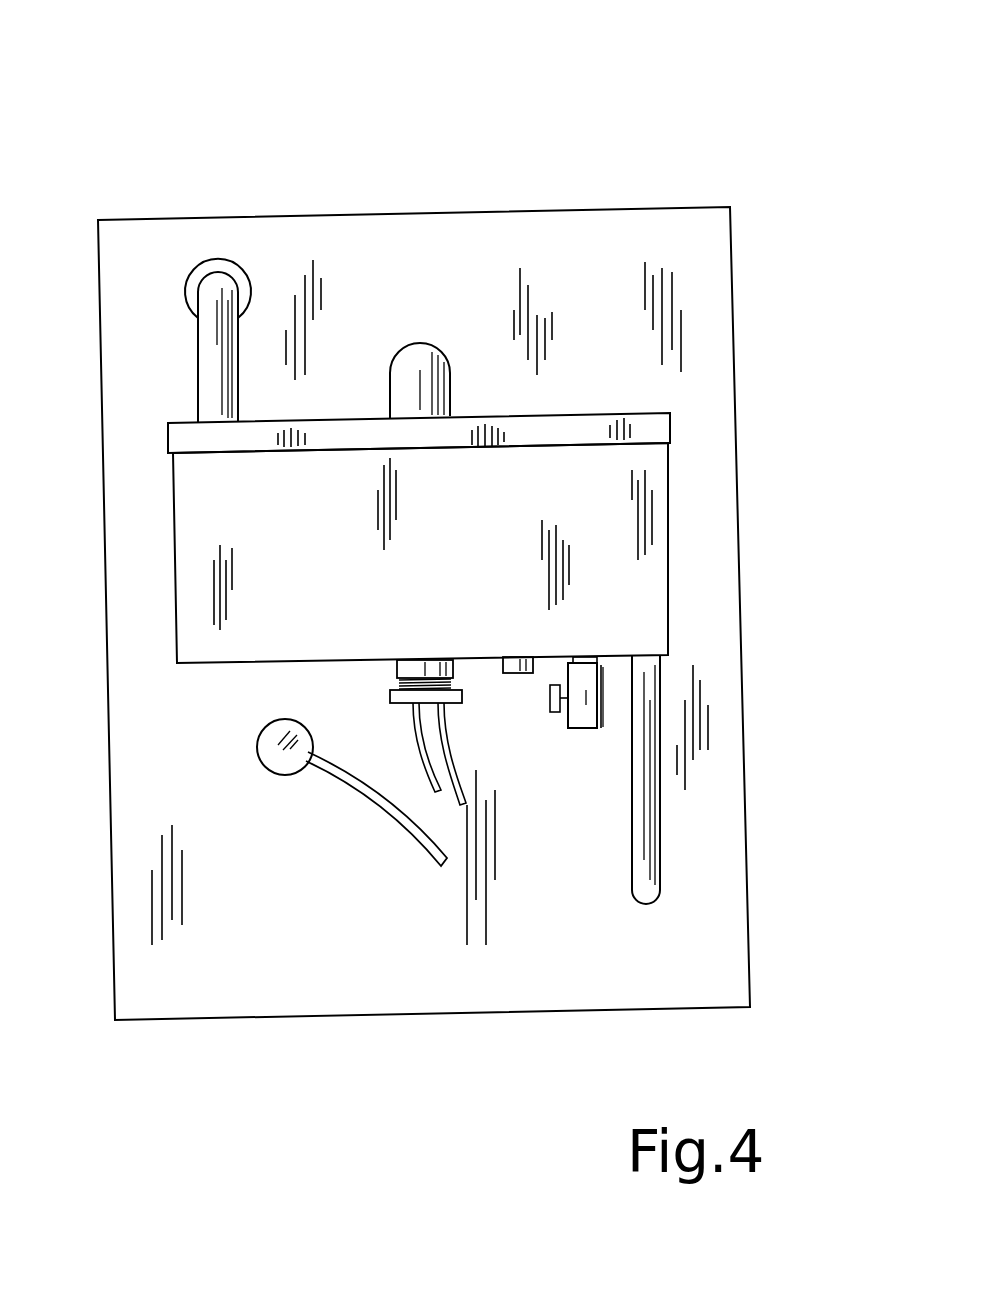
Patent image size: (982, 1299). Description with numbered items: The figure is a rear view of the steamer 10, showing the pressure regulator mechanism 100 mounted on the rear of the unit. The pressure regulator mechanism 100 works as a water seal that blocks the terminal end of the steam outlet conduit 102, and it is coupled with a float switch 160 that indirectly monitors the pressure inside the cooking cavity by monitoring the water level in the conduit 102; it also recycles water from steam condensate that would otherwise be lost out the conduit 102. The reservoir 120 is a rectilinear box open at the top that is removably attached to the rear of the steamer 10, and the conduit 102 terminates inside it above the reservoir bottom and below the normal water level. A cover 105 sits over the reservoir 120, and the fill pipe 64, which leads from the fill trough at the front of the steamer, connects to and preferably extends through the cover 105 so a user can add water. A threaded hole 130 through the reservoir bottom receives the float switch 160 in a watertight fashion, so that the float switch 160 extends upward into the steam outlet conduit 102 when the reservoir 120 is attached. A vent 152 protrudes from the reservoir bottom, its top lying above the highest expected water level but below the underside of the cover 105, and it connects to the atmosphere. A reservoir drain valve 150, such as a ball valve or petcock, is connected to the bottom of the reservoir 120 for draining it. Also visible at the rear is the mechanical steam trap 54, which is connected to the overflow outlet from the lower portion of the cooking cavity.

The steamer 10 is at (595, 163).
The mechanical steam trap 54 is at (262, 767).
The fill pipe 64 is at (198, 335).
The pressure regulator mechanism 100 is at (509, 597).
The steam outlet conduit 102 is at (427, 343).
The cover 105 is at (670, 428).
The reservoir 120 is at (670, 553).
The threaded hole 130 is at (455, 670).
The reservoir drain valve 150 is at (583, 728).
The vent 152 is at (518, 673).
The float switch 160 is at (407, 732).